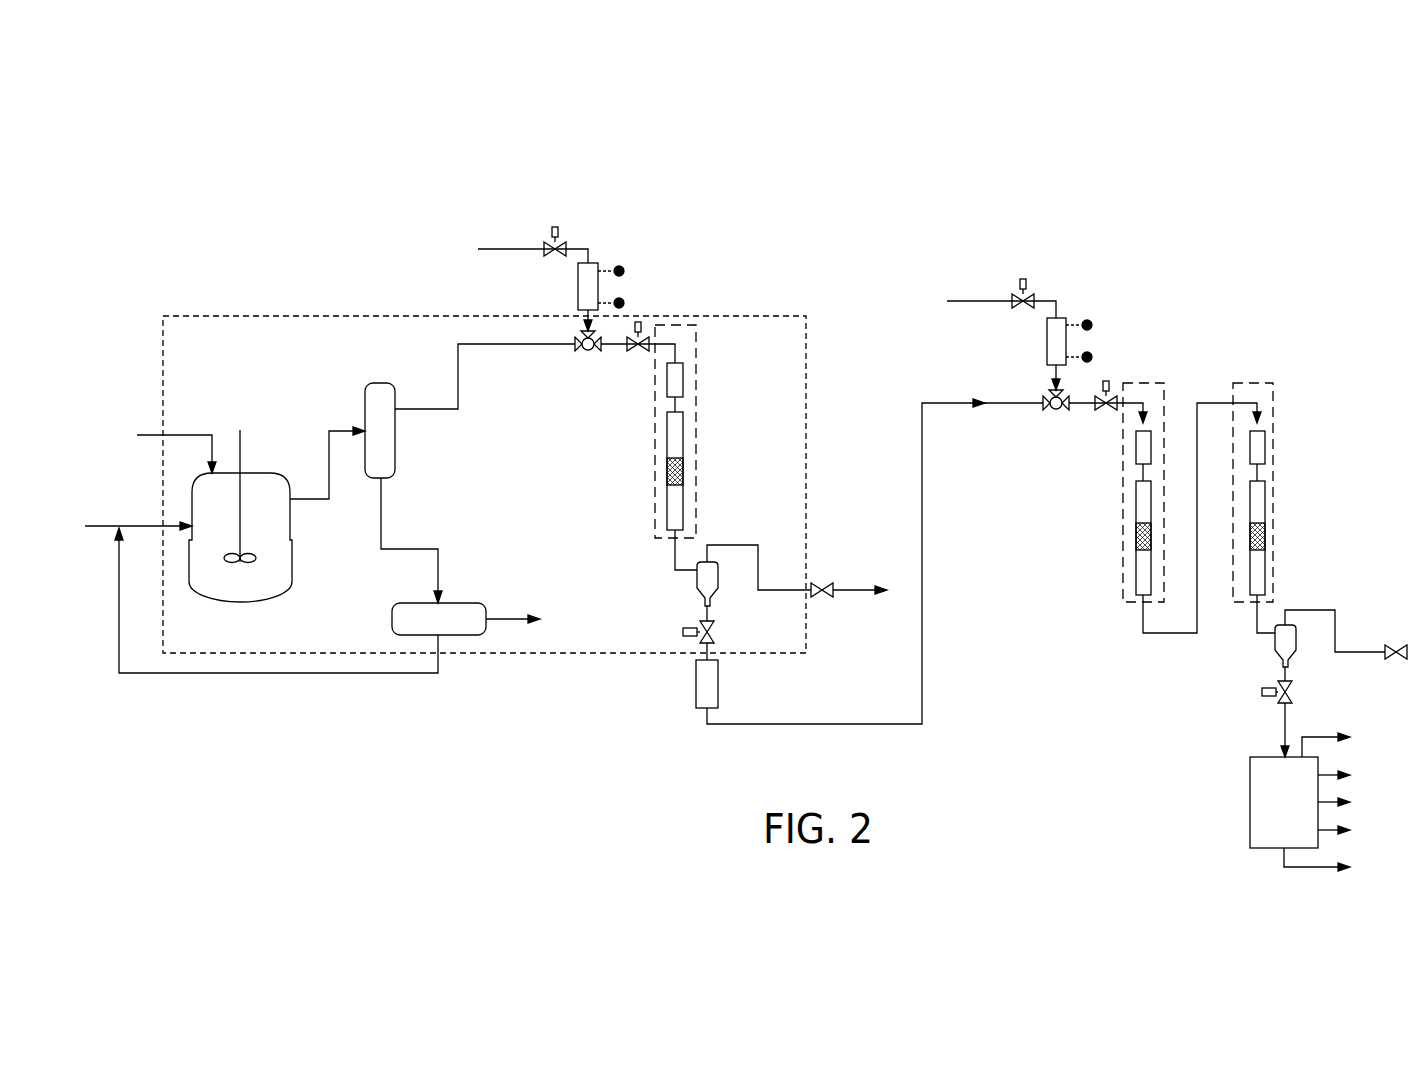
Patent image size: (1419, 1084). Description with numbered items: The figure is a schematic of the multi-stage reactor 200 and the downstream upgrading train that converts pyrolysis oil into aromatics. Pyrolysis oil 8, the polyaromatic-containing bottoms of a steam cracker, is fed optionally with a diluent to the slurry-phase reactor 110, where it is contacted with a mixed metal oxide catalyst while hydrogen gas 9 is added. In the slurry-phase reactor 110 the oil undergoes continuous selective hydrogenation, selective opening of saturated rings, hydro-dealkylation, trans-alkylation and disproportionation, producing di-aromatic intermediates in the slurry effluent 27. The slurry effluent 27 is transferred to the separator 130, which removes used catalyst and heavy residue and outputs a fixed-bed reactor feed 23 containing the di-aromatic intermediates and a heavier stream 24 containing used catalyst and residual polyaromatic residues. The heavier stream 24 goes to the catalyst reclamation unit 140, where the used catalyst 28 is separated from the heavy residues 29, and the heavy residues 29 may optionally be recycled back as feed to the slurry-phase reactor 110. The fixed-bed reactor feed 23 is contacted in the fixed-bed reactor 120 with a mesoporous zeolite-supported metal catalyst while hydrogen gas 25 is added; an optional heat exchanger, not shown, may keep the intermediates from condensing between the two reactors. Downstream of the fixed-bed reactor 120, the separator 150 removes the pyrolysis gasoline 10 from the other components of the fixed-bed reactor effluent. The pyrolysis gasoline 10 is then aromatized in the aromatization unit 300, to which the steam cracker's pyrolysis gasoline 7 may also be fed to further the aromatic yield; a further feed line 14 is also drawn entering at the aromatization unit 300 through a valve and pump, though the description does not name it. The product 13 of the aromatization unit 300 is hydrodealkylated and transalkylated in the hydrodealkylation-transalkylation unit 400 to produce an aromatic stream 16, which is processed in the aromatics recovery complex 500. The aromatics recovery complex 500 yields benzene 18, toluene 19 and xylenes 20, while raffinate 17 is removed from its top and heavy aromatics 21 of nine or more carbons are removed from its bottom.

The multi-stage reactor 200 is at (338, 212).
The pyrolysis gasoline 7 is at (1024, 418).
The pyrolysis oil 8 is at (100, 525).
The hydrogen gas 9 is at (143, 434).
The pyrolysis gasoline 10 is at (870, 724).
The product 13 is at (1140, 628).
The feed stream 14 is at (957, 300).
The aromatic stream 16 is at (1252, 634).
The raffinate 17 is at (1332, 739).
The benzene 18 is at (1332, 777).
The toluene 19 is at (1332, 804).
The xylenes 20 is at (1332, 832).
The heavy aromatics 21 is at (1332, 869).
The fixed-bed reactor feed 23 is at (503, 348).
The heavier stream 24 is at (418, 549).
The hydrogen gas 25 is at (495, 248).
The slurry effluent 27 is at (327, 435).
The used catalyst 28 is at (503, 617).
The heavy residues 29 is at (239, 675).
The slurry-phase reactor 110 is at (293, 565).
The fixed-bed reactor 120 is at (697, 420).
The separator 130 is at (387, 437).
The catalyst reclamation unit 140 is at (463, 628).
The separator 150 is at (692, 577).
The aromatization unit 300 is at (1172, 382).
The hydrodealkylation-transalkylation unit 400 is at (1283, 382).
The aromatics recovery complex 500 is at (1260, 822).